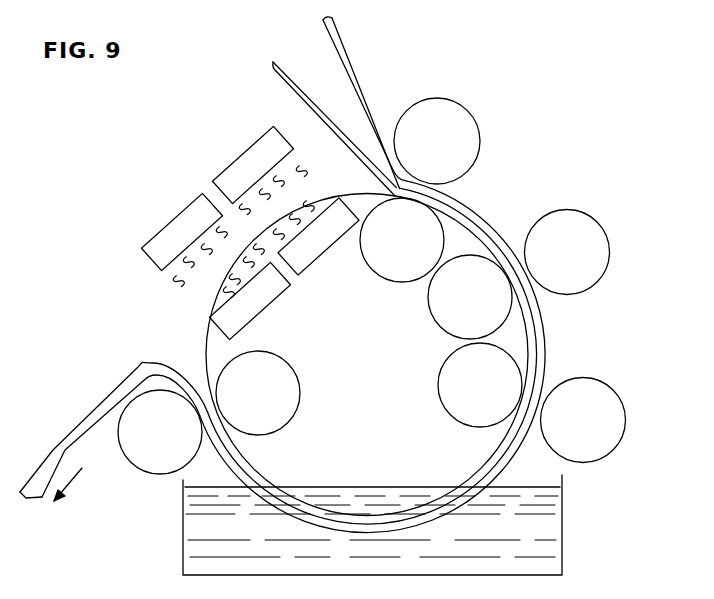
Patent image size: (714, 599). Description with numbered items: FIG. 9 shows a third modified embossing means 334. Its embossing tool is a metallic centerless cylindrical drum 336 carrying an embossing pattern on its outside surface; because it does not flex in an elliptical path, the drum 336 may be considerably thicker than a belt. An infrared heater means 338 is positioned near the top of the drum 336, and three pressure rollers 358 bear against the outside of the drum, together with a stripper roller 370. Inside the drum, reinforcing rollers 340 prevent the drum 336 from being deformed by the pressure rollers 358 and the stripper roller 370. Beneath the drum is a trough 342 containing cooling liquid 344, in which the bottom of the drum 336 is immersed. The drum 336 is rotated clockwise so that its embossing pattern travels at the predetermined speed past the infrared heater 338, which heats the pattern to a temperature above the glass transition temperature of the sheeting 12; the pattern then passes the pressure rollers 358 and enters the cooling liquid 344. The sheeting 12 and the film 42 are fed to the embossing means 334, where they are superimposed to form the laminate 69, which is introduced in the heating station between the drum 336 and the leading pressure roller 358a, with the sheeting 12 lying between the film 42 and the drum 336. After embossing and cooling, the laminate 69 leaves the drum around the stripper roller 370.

The sheeting 12 is at (302, 99).
The film 42 is at (342, 44).
The laminate 69 is at (545, 331).
The embossing means 334 is at (487, 197).
The cylindrical drum 336 is at (207, 341).
The infrared heater means 338 is at (170, 222).
The reinforcing rollers 340 is at (402, 284).
The trough 342 is at (568, 517).
The cooling liquid 344 is at (515, 535).
The pressure rollers 358 is at (587, 238).
The leading pressure roller 358a is at (460, 128).
The stripper roller 370 is at (150, 475).